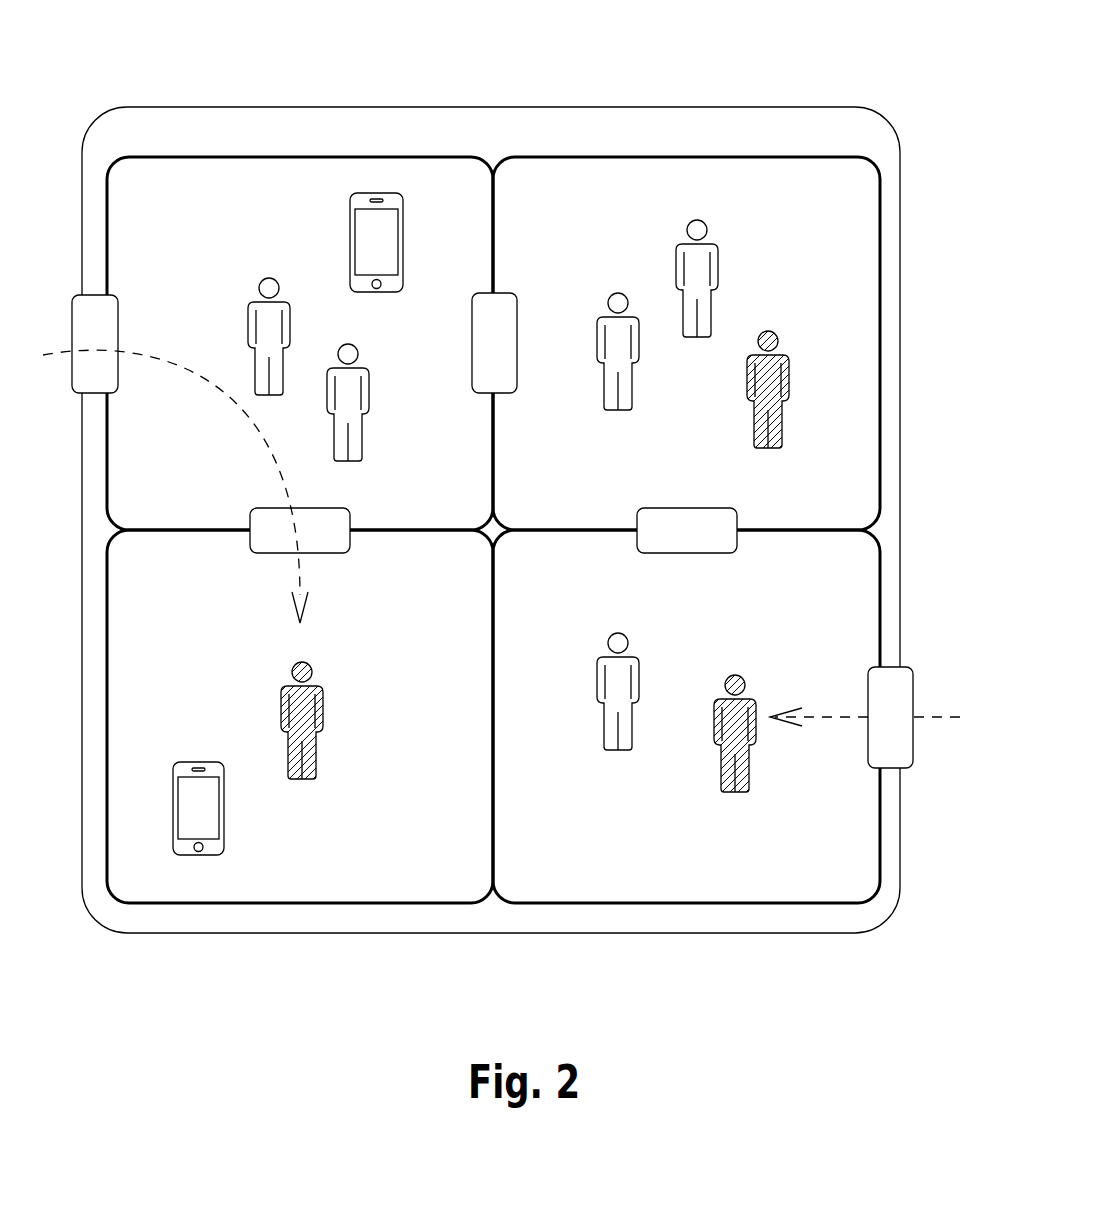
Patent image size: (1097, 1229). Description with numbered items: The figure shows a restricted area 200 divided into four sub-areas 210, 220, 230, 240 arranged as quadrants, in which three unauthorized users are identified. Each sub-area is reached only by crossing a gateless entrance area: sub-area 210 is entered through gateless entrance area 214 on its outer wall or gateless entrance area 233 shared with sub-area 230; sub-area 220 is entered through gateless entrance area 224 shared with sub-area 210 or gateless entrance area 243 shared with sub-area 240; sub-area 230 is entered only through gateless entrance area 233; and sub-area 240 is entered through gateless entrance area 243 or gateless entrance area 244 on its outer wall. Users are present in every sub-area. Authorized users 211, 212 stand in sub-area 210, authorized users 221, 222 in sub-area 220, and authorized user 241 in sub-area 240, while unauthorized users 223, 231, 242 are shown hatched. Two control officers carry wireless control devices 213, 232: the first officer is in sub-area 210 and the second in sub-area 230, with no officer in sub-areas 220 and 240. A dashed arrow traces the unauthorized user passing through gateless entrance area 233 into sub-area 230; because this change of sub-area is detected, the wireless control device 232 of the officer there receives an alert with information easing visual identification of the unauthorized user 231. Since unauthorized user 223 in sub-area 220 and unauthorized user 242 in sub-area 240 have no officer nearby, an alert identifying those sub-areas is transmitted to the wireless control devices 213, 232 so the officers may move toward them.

The restricted area 200 is at (788, 107).
The sub-area 210 is at (262, 157).
The authorized user 211 is at (275, 325).
The authorized user 212 is at (363, 398).
The wireless control device 213 is at (387, 235).
The gateless entrance area 214 is at (103, 312).
The sub-area 220 is at (686, 157).
The authorized user 221 is at (703, 270).
The authorized user 222 is at (627, 377).
The unauthorized user 223 is at (777, 417).
The gateless entrance area 224 is at (497, 312).
The sub-area 230 is at (328, 903).
The unauthorized user 231 is at (312, 753).
The wireless control device 232 is at (215, 833).
The gateless entrance area 233 is at (330, 545).
The sub-area 240 is at (715, 903).
The authorized user 241 is at (640, 668).
The unauthorized user 242 is at (747, 773).
The gateless entrance area 243 is at (697, 543).
The gateless entrance area 244 is at (905, 693).